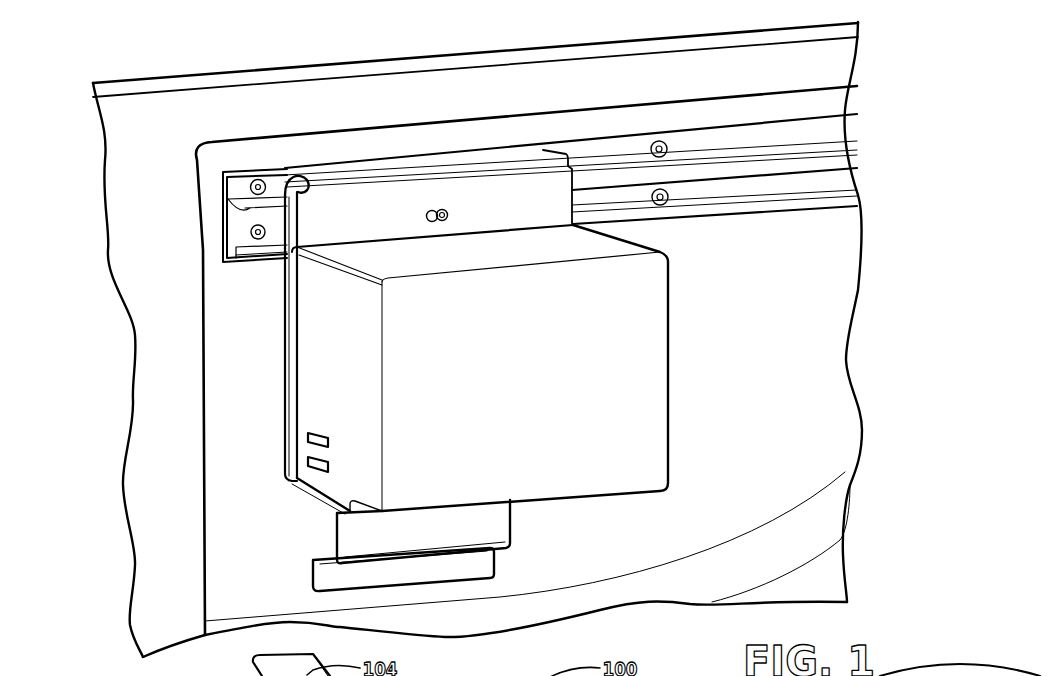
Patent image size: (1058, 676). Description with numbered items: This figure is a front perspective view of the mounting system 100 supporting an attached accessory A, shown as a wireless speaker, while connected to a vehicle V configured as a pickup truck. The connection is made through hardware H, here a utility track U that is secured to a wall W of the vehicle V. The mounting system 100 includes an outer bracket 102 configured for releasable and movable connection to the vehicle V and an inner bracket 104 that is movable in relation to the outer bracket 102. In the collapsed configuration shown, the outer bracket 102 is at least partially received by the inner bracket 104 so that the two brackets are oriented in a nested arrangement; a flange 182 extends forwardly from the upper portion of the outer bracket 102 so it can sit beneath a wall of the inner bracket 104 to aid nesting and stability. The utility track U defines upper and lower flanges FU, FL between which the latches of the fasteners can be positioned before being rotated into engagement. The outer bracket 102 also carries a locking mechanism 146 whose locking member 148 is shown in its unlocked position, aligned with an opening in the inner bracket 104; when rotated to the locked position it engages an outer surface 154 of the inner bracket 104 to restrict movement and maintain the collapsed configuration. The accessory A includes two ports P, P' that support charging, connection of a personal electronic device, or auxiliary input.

The mounting system 100 is at (268, 300).
The outer bracket 102 is at (305, 499).
The inner bracket 104 is at (340, 212).
The locking mechanism 146 is at (432, 204).
The locking member 148 is at (452, 206).
The outer surface 154 is at (552, 173).
The flange 182 is at (291, 181).
The accessory A is at (492, 246).
The upper flange FU is at (247, 213).
The lower flange FL is at (257, 262).
The hardware H is at (758, 120).
The utility track U is at (814, 135).
The vehicle V is at (298, 100).
The wall W is at (777, 297).
The port P is at (379, 415).
The port P' is at (381, 454).